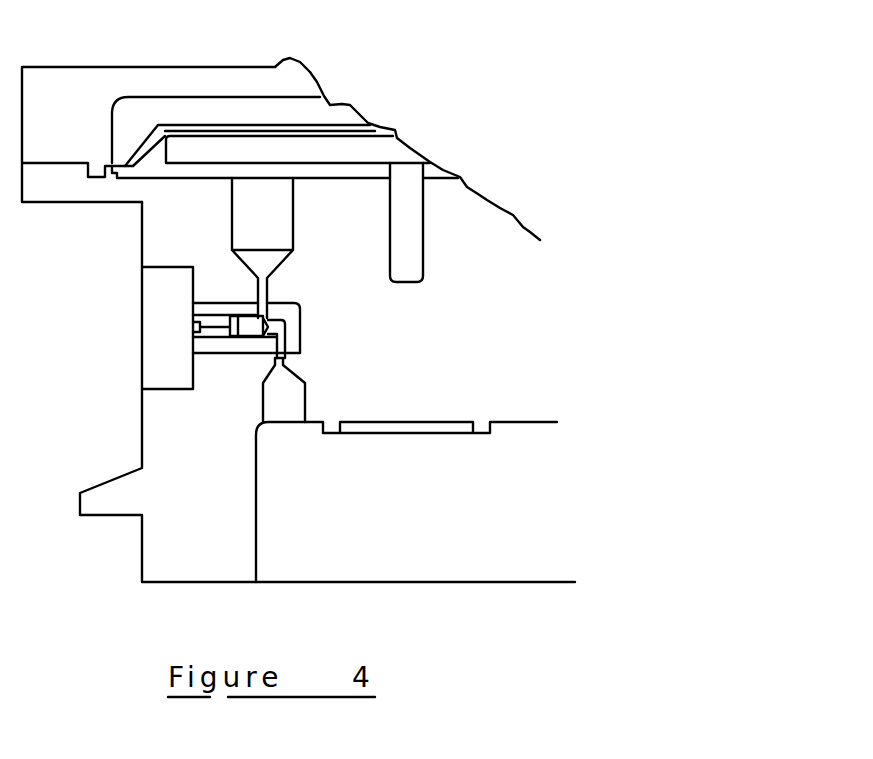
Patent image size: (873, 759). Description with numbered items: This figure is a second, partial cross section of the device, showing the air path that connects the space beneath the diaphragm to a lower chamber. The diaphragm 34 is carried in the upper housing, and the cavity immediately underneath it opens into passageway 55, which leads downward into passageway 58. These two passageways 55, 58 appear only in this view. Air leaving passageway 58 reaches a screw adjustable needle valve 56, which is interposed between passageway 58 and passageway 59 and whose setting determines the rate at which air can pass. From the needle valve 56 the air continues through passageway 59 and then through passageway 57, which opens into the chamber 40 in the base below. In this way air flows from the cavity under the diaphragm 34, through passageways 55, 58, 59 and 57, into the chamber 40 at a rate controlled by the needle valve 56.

The diaphragm 34 is at (200, 125).
The chamber 40 is at (285, 513).
The passageway 55 is at (243, 205).
The screw adjustable needle valve 56 is at (193, 323).
The passageway 57 is at (273, 405).
The passageway 58 is at (263, 288).
The passageway 59 is at (282, 358).